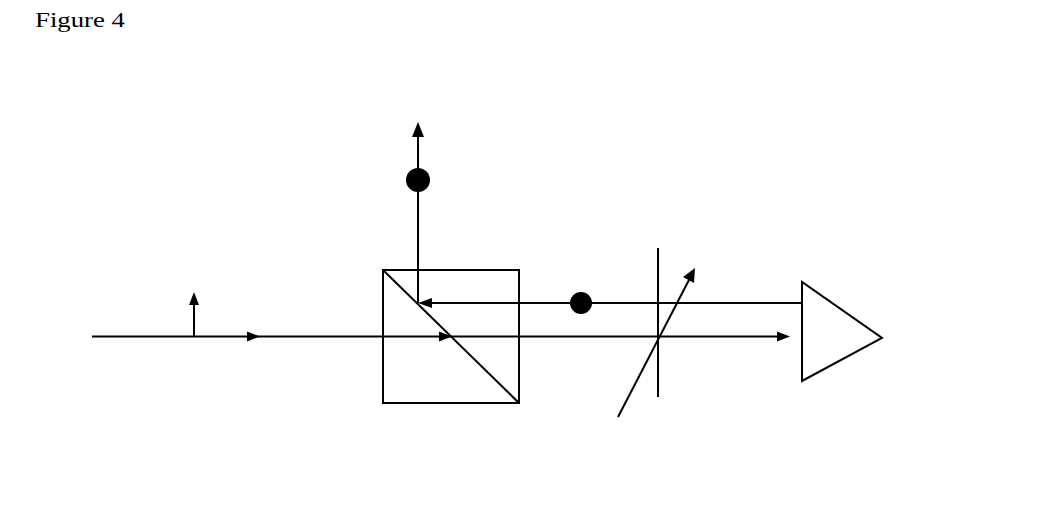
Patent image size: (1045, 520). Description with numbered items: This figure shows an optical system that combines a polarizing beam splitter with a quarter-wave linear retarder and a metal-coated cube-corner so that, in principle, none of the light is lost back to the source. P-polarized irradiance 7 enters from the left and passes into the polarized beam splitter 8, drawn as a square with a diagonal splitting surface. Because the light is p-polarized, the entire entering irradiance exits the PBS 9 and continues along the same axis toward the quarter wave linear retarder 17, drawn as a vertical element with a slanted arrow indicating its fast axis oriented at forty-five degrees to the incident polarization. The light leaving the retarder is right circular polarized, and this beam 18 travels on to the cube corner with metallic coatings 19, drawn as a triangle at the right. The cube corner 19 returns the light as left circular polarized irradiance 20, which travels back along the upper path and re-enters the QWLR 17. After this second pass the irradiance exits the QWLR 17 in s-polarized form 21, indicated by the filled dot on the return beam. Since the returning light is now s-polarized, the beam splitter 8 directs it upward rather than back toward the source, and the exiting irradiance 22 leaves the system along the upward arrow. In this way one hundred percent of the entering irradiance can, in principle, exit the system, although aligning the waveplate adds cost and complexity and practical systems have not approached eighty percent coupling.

The p-polarized irradiance 7 is at (237, 316).
The polarized beam splitter 8 is at (451, 363).
The irradiance exiting the PBS 9 is at (520, 336).
The quarter wave linear retarder 17 is at (656, 310).
The transmitted beam to detector 18 is at (724, 357).
The cube corner with metallic coatings 19 is at (857, 331).
The left circular polarized irradiance 20 is at (610, 283).
The s-polarized irradiance 21 is at (575, 286).
The output beam 22 is at (410, 195).